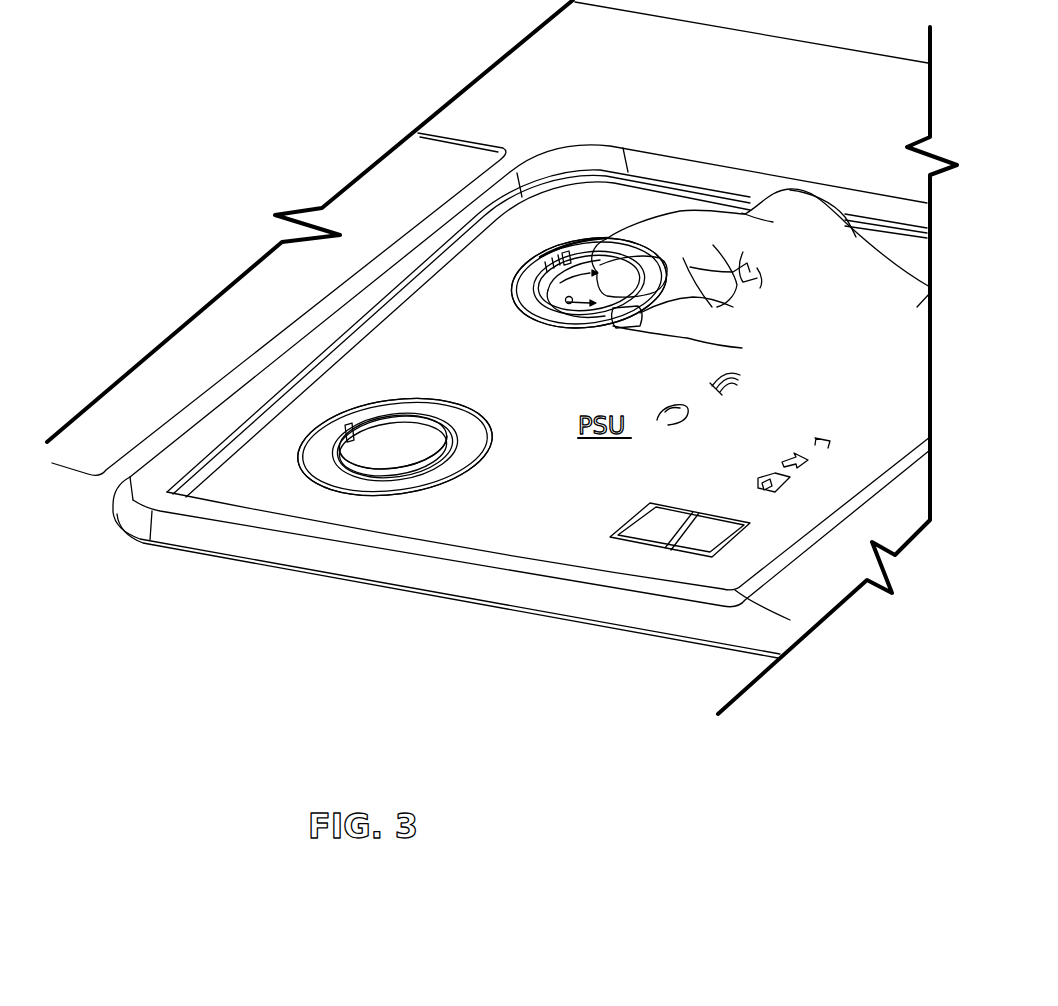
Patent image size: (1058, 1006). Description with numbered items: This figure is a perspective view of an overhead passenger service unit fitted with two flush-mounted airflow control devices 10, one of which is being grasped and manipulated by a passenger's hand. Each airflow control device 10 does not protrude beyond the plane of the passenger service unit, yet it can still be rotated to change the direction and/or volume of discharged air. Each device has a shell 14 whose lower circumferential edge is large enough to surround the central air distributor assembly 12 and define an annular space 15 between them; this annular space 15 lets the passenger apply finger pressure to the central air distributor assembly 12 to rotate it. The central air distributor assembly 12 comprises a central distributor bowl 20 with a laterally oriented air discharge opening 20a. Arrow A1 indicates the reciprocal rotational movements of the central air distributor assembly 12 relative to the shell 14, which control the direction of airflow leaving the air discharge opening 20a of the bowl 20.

The airflow control device 10 is at (359, 385).
The central air distributor assembly 12 is at (583, 238).
The shell 14 is at (447, 481).
The annular space 15 is at (325, 471).
The central distributor bowl 20 is at (395, 412).
The air discharge opening 20a is at (347, 428).
The arrow A1 is at (573, 303).